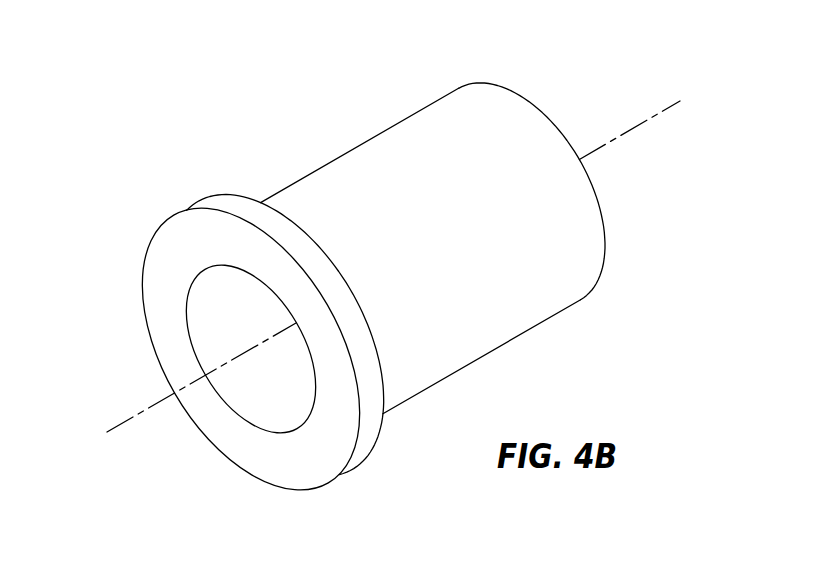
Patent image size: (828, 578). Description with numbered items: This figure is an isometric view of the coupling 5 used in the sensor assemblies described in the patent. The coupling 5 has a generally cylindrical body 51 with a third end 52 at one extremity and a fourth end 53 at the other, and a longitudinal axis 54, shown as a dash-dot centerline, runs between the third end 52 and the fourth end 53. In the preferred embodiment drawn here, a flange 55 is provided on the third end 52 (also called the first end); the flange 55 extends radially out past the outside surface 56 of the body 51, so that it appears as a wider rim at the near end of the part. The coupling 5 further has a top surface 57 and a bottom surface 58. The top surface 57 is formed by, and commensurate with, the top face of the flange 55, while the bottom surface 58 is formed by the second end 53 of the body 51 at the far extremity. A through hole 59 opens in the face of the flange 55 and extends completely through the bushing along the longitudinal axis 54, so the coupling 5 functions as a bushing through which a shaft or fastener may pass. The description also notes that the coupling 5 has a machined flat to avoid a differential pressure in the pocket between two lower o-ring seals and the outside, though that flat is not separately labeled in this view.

The coupling 5 is at (230, 106).
The body 51 is at (437, 136).
The third end 52 is at (194, 209).
The fourth end 53 is at (515, 92).
The longitudinal axis 54 is at (128, 421).
The flange 55 is at (233, 246).
The outside surface 56 is at (548, 322).
The top surface 57 is at (167, 268).
The bottom surface 58 is at (550, 116).
The through hole 59 is at (262, 389).